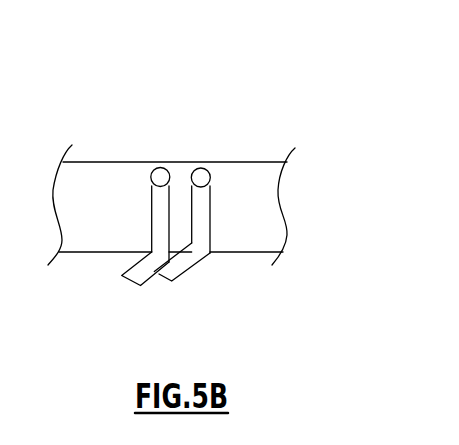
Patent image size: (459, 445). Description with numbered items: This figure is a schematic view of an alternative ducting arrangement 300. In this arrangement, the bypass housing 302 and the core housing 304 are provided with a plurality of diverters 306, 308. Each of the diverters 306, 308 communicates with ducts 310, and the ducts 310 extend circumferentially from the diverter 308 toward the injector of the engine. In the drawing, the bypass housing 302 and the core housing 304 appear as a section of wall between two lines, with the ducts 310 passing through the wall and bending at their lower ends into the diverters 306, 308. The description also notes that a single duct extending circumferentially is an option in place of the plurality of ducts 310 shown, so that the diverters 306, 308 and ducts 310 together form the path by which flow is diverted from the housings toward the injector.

The ducting arrangement 300 is at (194, 193).
The bypass housing 302 is at (93, 163).
The core housing 304 is at (260, 252).
The diverter 306 is at (130, 280).
The diverter 308 is at (171, 281).
The ducts 310 is at (161, 176).